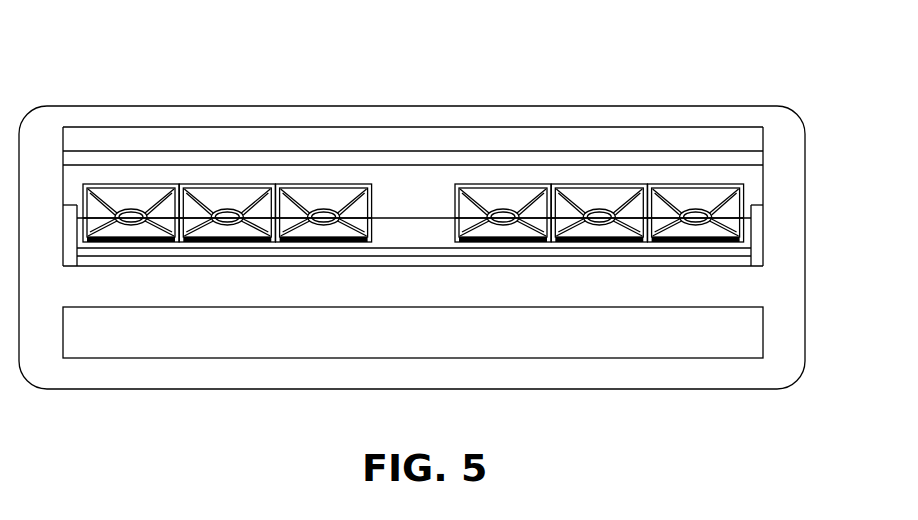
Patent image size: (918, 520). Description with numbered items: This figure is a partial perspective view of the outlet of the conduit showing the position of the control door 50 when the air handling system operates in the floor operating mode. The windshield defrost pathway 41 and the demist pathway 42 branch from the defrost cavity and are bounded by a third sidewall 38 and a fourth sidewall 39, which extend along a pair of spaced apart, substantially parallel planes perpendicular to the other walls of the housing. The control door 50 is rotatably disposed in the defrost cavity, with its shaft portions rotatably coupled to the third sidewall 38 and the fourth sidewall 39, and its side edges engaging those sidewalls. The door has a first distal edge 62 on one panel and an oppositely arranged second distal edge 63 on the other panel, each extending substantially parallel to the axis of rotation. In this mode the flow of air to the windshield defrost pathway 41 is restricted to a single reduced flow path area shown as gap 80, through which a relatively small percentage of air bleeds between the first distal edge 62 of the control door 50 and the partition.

The third sidewall 38 is at (64, 176).
The fourth sidewall 39 is at (749, 178).
The windshield defrost pathway 41 is at (170, 127).
The demist pathway 42 is at (133, 359).
The control door 50 is at (408, 178).
The first distal edge 62 is at (130, 252).
The second distal edge 63 is at (258, 150).
The gap 80 is at (230, 258).